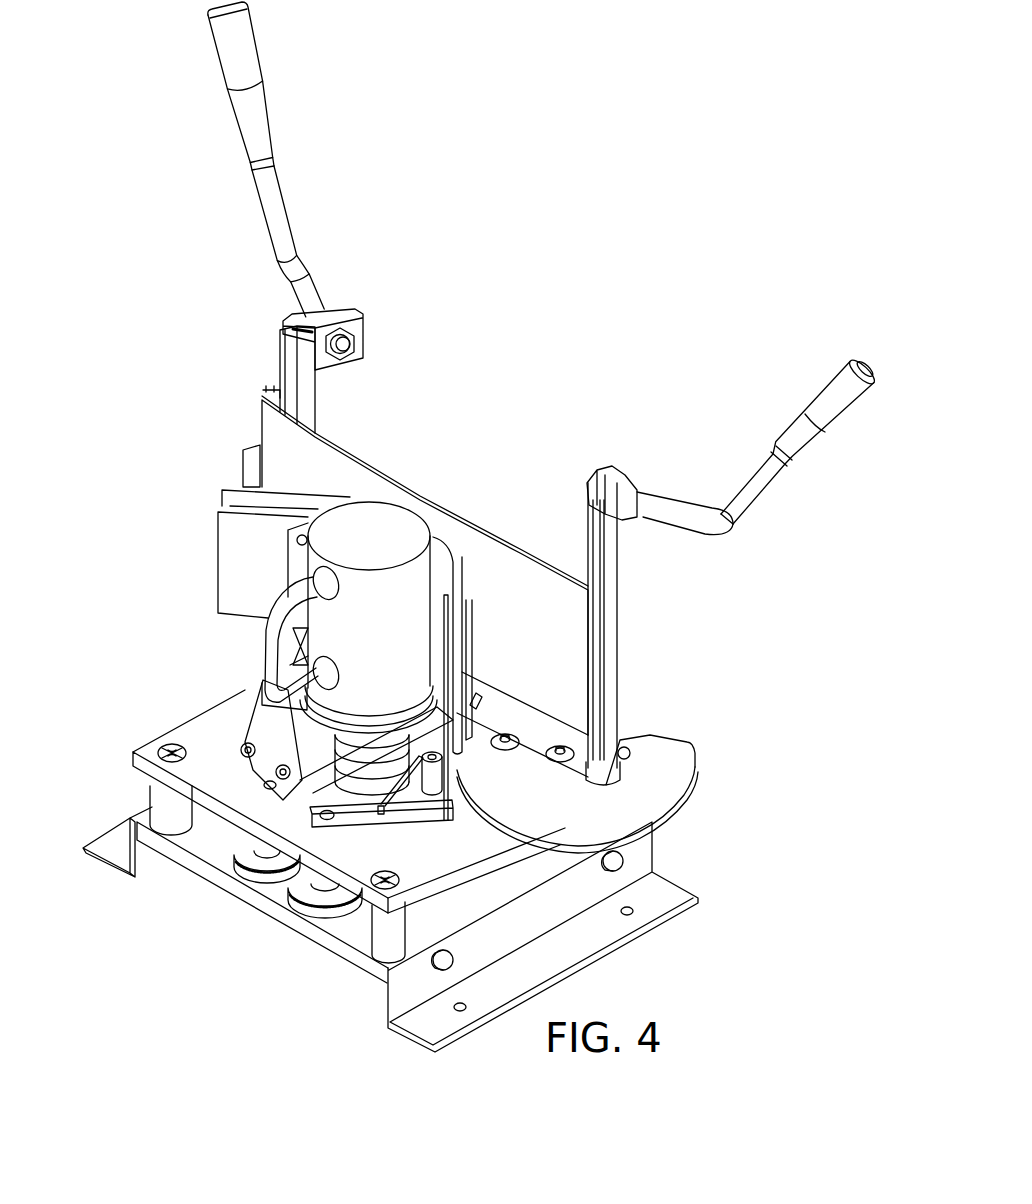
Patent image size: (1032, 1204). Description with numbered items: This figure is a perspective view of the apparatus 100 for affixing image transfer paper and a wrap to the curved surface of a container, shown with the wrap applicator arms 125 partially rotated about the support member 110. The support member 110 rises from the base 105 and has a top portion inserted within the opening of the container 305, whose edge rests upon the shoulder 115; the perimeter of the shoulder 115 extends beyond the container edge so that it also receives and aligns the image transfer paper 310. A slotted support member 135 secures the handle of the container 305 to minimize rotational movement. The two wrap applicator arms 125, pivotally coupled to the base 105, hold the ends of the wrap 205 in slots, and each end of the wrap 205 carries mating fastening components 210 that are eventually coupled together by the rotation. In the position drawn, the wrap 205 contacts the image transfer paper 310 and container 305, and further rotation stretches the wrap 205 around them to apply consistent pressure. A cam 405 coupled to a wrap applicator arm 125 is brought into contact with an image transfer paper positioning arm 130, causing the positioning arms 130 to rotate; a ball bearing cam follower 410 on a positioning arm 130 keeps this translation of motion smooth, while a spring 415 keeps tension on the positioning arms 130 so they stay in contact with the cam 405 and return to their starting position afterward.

The apparatus 100 is at (706, 164).
The base 105 is at (133, 757).
The support member 110 is at (350, 775).
The shoulder 115 is at (387, 713).
The wrap applicator arms 125 is at (288, 210).
The image transfer paper positioning arms 130 is at (466, 688).
The slotted support member 135 is at (250, 723).
The wrap 205 is at (497, 545).
The mating fastening components 210 is at (243, 453).
The container 305 is at (393, 553).
The image transfer paper 310 is at (222, 495).
The cam 405 is at (668, 785).
The ball bearing cam follower 410 is at (490, 784).
The spring 415 is at (400, 797).